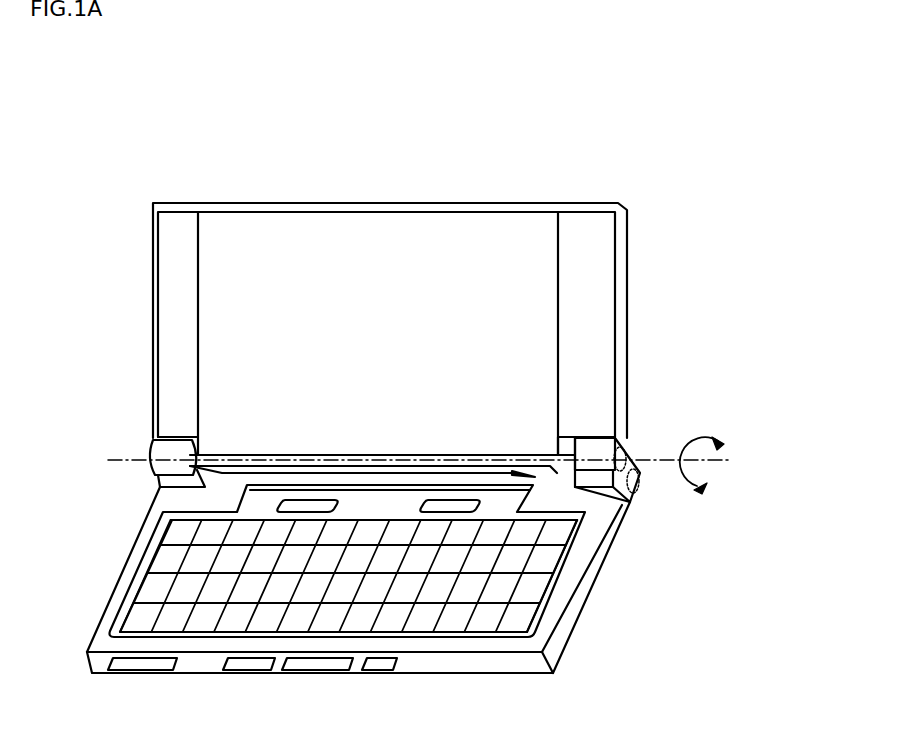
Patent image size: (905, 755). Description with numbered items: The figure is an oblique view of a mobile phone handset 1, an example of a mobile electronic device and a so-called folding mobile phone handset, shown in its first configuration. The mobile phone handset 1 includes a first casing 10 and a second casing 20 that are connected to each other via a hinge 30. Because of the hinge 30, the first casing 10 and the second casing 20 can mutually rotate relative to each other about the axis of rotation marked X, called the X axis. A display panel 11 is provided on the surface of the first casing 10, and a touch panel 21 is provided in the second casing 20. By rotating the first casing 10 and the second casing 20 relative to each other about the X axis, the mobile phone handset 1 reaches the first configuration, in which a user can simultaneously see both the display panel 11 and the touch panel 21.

The mobile phone handset 1 is at (597, 148).
The first casing 10 is at (153, 298).
The display panel 11 is at (340, 240).
The second casing 20 is at (116, 585).
The touch panel 21 is at (562, 535).
The hinge 30 is at (635, 444).